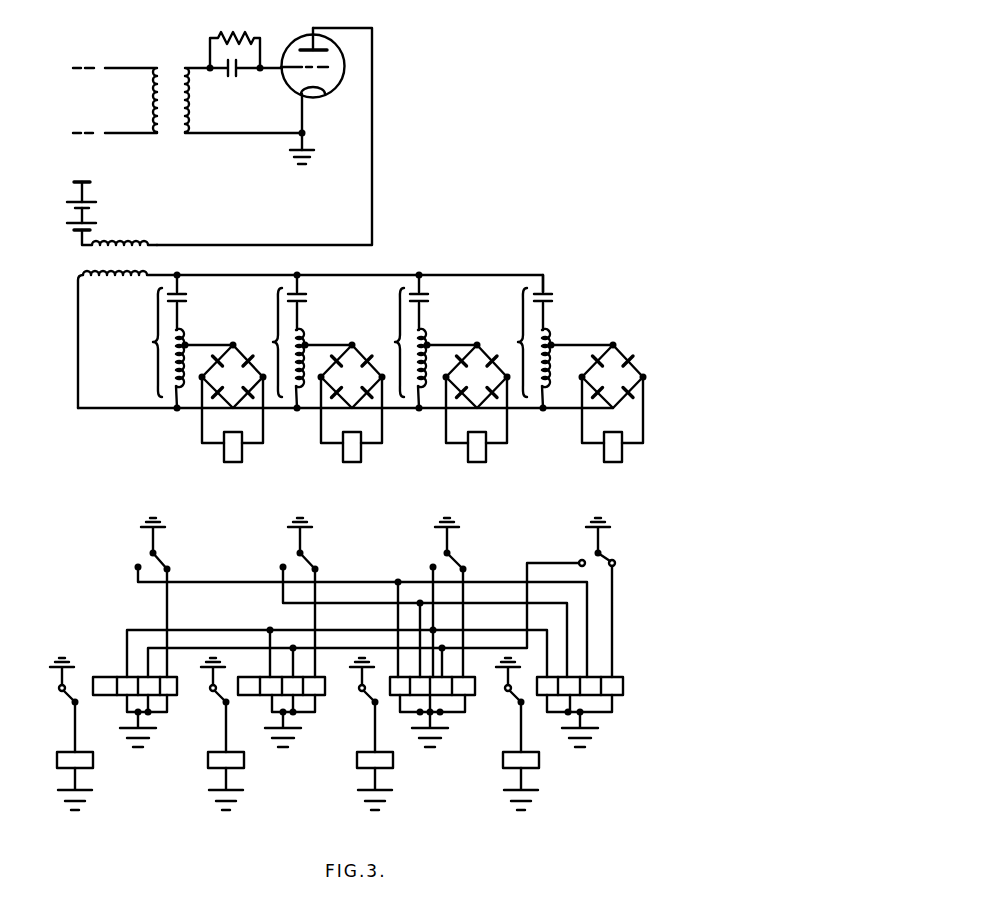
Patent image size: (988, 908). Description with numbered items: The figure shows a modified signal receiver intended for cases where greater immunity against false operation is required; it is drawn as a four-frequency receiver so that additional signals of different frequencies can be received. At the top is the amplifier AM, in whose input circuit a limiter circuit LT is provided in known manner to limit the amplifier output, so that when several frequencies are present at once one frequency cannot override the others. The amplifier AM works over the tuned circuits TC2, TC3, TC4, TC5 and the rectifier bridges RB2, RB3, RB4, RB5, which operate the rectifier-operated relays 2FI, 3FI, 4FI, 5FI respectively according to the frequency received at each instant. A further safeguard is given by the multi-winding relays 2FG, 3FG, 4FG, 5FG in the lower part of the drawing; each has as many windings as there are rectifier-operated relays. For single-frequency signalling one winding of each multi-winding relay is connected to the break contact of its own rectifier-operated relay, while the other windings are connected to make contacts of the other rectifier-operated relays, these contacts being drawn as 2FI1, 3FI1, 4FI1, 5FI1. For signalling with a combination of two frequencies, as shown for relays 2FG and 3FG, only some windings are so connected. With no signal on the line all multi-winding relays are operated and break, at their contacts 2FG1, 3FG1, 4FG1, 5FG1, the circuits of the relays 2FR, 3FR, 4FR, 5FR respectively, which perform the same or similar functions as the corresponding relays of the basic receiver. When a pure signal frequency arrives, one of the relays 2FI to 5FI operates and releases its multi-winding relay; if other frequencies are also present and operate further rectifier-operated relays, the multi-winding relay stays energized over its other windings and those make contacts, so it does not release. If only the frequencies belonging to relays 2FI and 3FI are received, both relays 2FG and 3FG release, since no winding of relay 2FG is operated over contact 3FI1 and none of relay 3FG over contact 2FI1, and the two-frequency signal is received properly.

The limiter circuit LT is at (211, 57).
The amplifier AM is at (345, 56).
The tuned circuit TC2 is at (148, 341).
The tuned circuit TC3 is at (268, 341).
The tuned circuit TC4 is at (390, 341).
The tuned circuit TC5 is at (514, 341).
The rectifier bridge RB2 is at (230, 358).
The rectifier bridge RB3 is at (349, 358).
The rectifier bridge RB4 is at (474, 358).
The rectifier bridge RB5 is at (610, 358).
The rectifier-operated relay 2FI is at (240, 423).
The rectifier-operated relay 3FI is at (359, 423).
The rectifier-operated relay 4FI is at (484, 423).
The rectifier-operated relay 5FI is at (620, 423).
The contact of relay 2FI 2FI1 is at (176, 545).
The contact of relay 3FI 3FI1 is at (322, 545).
The contact of relay 4FI 4FI1 is at (470, 545).
The contact of relay 5FI 5FI1 is at (620, 542).
The multi-winding relay 2FG is at (101, 686).
The multi-winding relay 3FG is at (248, 686).
The multi-winding relay 4FG is at (458, 690).
The multi-winding relay 5FG is at (614, 687).
The contact of relay 2FG 2FG1 is at (47, 685).
The contact of relay 3FG 3FG1 is at (198, 685).
The contact of relay 4FG 4FG1 is at (347, 685).
The contact of relay 5FG 5FG1 is at (493, 685).
The relay 2FR is at (95, 781).
The relay 3FR is at (246, 781).
The relay 4FR is at (354, 781).
The relay 5FR is at (502, 781).